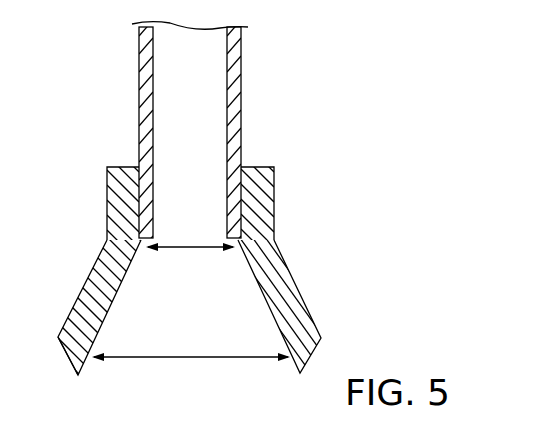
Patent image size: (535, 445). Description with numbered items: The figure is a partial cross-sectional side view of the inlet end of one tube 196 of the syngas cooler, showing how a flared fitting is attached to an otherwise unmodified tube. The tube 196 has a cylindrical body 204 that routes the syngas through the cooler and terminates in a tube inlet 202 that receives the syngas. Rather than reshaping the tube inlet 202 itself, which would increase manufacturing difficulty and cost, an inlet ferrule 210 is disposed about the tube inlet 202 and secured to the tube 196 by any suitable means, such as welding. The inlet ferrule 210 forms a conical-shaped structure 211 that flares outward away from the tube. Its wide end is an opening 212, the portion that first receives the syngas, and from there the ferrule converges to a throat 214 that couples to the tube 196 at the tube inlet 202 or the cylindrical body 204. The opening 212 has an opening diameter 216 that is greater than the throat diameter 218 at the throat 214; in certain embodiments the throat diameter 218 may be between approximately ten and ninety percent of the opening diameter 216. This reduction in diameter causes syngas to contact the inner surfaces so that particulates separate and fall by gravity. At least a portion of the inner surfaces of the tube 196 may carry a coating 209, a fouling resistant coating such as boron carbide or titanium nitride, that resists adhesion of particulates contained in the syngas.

The tube 196 is at (235, 82).
The cylindrical body 204 is at (235, 140).
The tube inlet 202 is at (240, 190).
The conical-shaped structure 211 is at (84, 250).
The inlet ferrule 210 is at (83, 288).
The opening 212 is at (122, 382).
The throat diameter 218 is at (188, 250).
The throat 214 is at (208, 262).
The opening diameter 216 is at (190, 357).
The coating 209 is at (272, 313).